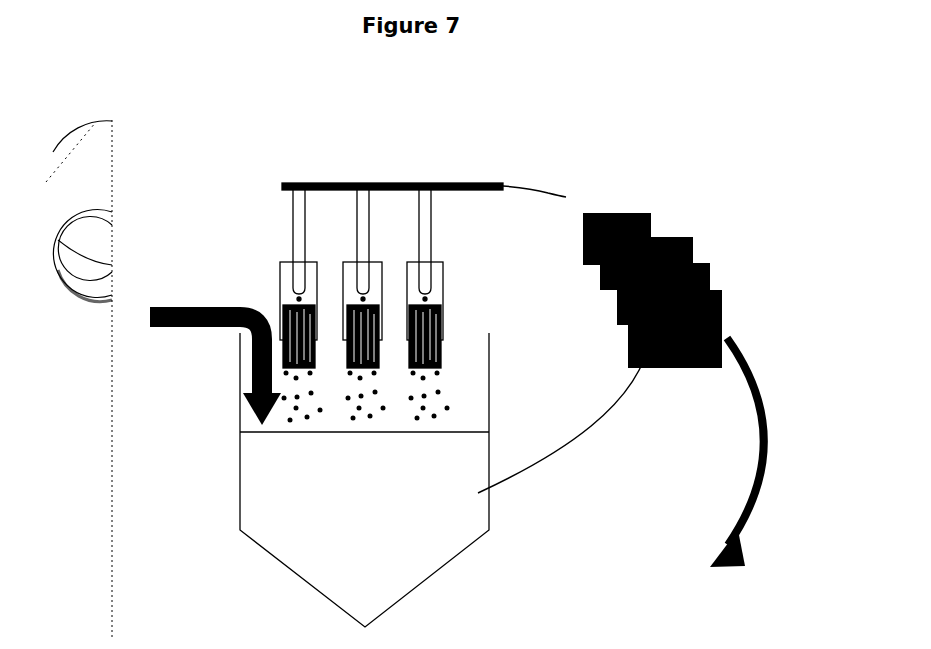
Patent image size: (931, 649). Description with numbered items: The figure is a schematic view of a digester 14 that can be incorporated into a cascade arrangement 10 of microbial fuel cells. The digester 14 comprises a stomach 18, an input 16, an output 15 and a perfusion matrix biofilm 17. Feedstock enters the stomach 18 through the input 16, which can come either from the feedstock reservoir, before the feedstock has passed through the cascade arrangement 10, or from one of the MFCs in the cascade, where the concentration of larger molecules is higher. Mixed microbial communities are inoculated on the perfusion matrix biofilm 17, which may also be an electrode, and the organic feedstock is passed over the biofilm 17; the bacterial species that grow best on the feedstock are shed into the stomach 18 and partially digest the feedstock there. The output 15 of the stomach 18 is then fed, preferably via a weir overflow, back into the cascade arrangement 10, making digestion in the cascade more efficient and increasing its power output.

The cascade arrangement 10 is at (703, 254).
The digester 14 is at (200, 597).
The output 15 is at (552, 470).
The input 16 is at (554, 177).
The perfusion matrix biofilm 17 is at (283, 302).
The stomach 18 is at (420, 588).